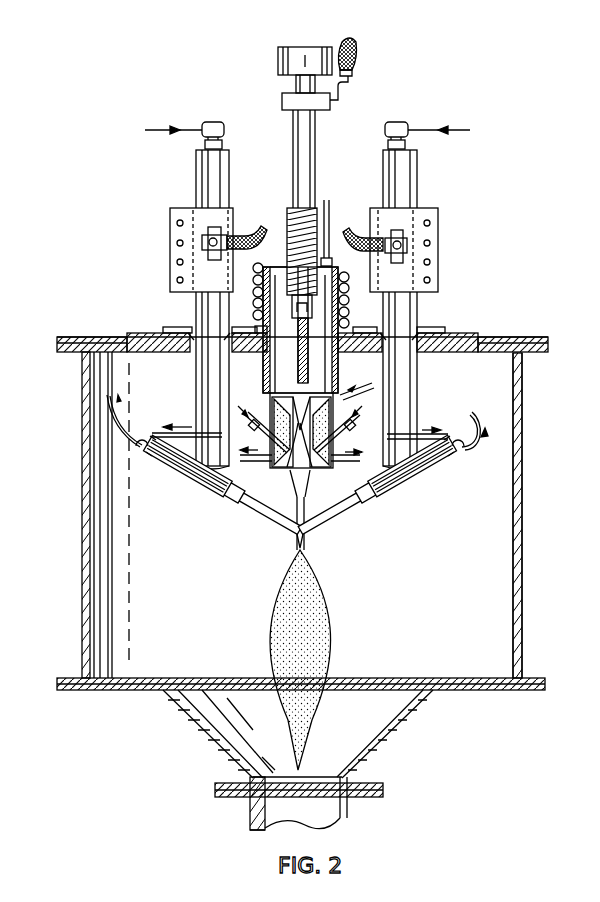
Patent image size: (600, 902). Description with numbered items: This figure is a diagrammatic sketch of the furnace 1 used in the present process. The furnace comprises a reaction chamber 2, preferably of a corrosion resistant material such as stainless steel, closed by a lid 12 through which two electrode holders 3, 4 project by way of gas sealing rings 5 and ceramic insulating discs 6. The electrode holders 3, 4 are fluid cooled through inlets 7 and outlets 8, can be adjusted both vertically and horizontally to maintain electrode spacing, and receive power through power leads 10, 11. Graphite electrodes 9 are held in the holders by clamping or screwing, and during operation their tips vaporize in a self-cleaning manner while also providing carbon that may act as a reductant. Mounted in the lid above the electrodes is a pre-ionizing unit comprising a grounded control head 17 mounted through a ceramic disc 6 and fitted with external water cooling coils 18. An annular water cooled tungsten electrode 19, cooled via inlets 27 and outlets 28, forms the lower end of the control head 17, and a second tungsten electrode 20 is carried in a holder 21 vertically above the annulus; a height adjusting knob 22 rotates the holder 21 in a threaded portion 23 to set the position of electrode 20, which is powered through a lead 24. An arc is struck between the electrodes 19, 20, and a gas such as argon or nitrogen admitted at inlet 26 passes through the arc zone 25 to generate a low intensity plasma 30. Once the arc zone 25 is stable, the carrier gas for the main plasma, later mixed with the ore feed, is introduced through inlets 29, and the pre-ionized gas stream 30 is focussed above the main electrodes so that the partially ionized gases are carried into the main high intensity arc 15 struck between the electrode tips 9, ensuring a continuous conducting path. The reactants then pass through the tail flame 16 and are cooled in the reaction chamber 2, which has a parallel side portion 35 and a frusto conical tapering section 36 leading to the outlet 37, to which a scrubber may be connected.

The furnace 1 is at (110, 327).
The reaction chamber 2 is at (113, 523).
The electrode holder 3 is at (197, 184).
The electrode holder 4 is at (418, 184).
The gas sealing ring 5 is at (188, 343).
The ceramic insulating disc 6 is at (150, 333).
The inlet 7 is at (213, 122).
The outlet 8 is at (297, 431).
The graphite electrode 9 is at (257, 528).
The power lead 10 is at (262, 236).
The power lead 11 is at (352, 233).
The lid 12 is at (495, 338).
The main high intensity arc 15 is at (303, 555).
The tail flame 16 is at (325, 642).
The control head 17 is at (262, 330).
The water cooling coils 18 is at (344, 279).
The annular water cooled electrode 19 is at (282, 437).
The electrode 20 is at (340, 370).
The holder 21 is at (312, 306).
The height adjusting knob 22 is at (297, 47).
The threaded portion 23 is at (296, 213).
The lead 24 is at (322, 108).
The arc zone 25 is at (313, 250).
The inlet 26 is at (327, 190).
The inlet 27 is at (254, 395).
The outlet 28 is at (312, 470).
The inlet 29 is at (326, 440).
The low intensity plasma 30 is at (296, 487).
The parallel side portion 35 is at (517, 592).
The frusto conical tapering section 36 is at (205, 738).
The outlet 37 is at (308, 783).